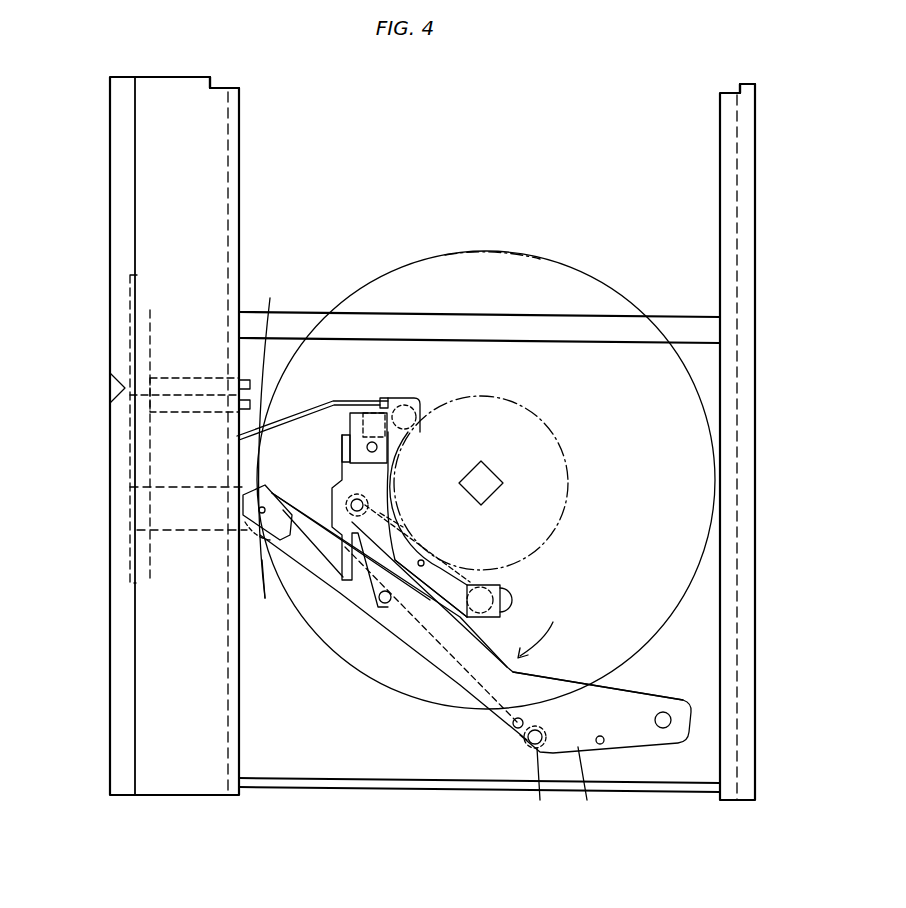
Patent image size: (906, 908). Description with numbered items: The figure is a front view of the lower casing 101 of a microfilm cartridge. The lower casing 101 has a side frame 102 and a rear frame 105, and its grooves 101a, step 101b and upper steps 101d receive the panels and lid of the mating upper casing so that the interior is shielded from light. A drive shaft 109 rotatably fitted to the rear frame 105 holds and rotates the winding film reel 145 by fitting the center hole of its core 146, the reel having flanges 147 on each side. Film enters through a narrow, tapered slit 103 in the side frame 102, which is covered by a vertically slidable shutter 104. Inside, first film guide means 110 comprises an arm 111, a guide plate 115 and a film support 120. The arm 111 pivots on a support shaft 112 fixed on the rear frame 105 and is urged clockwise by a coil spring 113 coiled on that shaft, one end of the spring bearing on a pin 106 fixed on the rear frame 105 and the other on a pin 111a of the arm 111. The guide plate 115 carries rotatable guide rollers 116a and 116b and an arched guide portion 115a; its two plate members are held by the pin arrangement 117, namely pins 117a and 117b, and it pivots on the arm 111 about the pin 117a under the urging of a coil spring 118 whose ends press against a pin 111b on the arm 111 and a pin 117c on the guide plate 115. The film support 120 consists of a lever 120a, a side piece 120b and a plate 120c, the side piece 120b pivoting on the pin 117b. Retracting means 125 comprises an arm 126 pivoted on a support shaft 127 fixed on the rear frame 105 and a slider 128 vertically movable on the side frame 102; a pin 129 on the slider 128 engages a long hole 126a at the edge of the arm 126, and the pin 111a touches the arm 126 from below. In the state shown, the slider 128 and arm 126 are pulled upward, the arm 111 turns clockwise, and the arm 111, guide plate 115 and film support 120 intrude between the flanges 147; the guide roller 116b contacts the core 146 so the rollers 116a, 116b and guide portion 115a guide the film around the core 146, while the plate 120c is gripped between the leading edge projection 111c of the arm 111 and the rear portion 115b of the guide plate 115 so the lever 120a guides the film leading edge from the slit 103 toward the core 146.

The lower casing 101 is at (427, 443).
The grooves 101a is at (236, 148).
The step 101b is at (446, 790).
The upper steps 101d is at (220, 83).
The side frame 102 is at (110, 203).
The slit 103 is at (188, 395).
The shutter 104 is at (130, 294).
The rear frame 105 is at (700, 668).
The pin 106 is at (633, 716).
The drive shaft 109 is at (497, 478).
The first film guide means 110 is at (341, 598).
The arm 111 is at (415, 655).
The pin 111a is at (522, 730).
The pin 111b is at (383, 604).
The leading edge projection 111c is at (370, 400).
The support shaft 112 is at (537, 752).
The coil spring 113 is at (581, 752).
The guide plate 115 is at (456, 605).
The guide portion 115a is at (480, 560).
The rear portion 115b is at (397, 400).
The guide roller 116a is at (506, 594).
The guide roller 116b is at (420, 425).
The bracket 117 is at (360, 521).
The pin 117a is at (348, 504).
The pin 117b is at (352, 455).
The pin 117c is at (425, 560).
The coil spring 118 is at (402, 522).
The film support 120 is at (345, 400).
The lever 120a is at (280, 438).
The side piece 120b is at (350, 428).
The plate 120c is at (378, 400).
The retracting means 125 is at (545, 628).
The arm 126 is at (555, 685).
The long hole 126a is at (265, 592).
The support shaft 127 is at (660, 728).
The slider 128 is at (130, 486).
The pin 129 is at (258, 506).
The film reel 145 is at (549, 249).
The core 146 is at (540, 400).
The flanges 147 is at (495, 250).